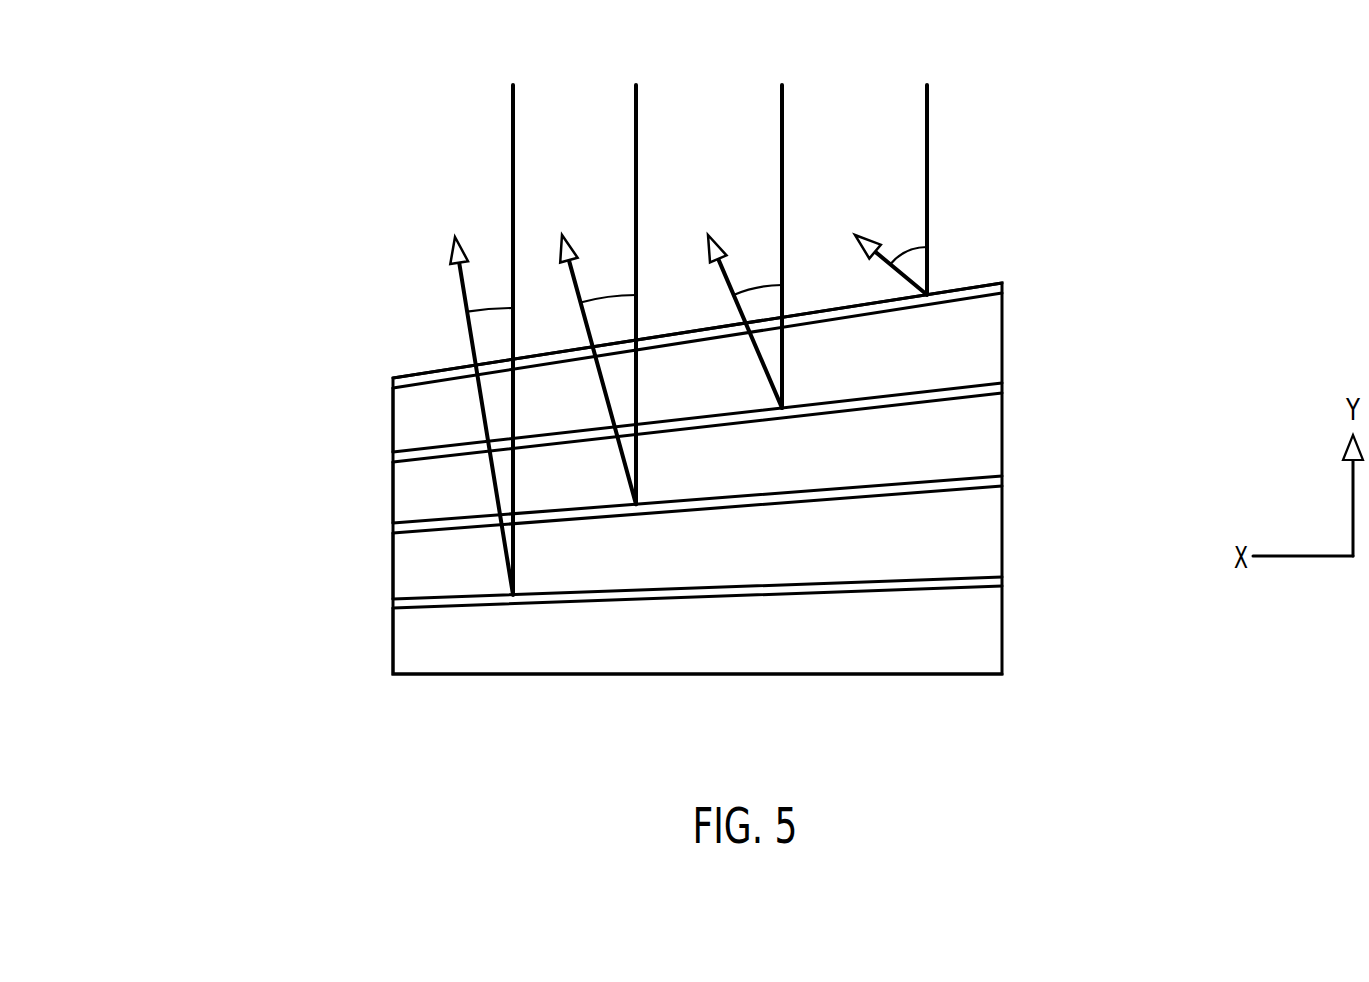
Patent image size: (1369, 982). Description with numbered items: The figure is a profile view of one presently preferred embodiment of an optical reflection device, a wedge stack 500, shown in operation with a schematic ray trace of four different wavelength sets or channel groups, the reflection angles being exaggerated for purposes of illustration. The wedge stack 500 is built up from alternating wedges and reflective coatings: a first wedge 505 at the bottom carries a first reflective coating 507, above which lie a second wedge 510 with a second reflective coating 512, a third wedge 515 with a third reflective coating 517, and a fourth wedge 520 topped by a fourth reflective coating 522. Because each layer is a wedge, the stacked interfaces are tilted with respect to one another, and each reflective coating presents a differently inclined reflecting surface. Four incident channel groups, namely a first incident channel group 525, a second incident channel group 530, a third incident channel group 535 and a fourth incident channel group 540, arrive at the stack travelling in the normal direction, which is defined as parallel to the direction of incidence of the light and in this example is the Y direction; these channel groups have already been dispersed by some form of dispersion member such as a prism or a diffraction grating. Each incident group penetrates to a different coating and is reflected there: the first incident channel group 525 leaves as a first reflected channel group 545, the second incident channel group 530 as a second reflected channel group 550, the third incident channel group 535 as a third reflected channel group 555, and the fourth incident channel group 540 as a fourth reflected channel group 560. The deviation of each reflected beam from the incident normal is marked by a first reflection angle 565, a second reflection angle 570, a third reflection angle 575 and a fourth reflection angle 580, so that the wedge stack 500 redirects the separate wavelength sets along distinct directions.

The wedge stack 500 is at (157, 447).
The first wedge 505 is at (411, 640).
The first reflective coating 507 is at (393, 604).
The second wedge 510 is at (411, 565).
The second reflective coating 512 is at (393, 528).
The third wedge 515 is at (411, 492).
The third reflective coating 517 is at (393, 457).
The fourth wedge 520 is at (411, 419).
The fourth reflective coating 522 is at (393, 383).
The first incident channel group 525 is at (513, 320).
The second incident channel group 530 is at (636, 274).
The third incident channel group 535 is at (782, 226).
The fourth incident channel group 540 is at (927, 170).
The first reflected channel group 545 is at (474, 395).
The second reflected channel group 550 is at (589, 350).
The third reflected channel group 555 is at (735, 302).
The fourth reflected channel group 560 is at (881, 245).
The first reflection angle 565 is at (493, 308).
The second reflection angle 570 is at (607, 295).
The third reflection angle 575 is at (757, 285).
The fourth reflection angle 580 is at (908, 247).